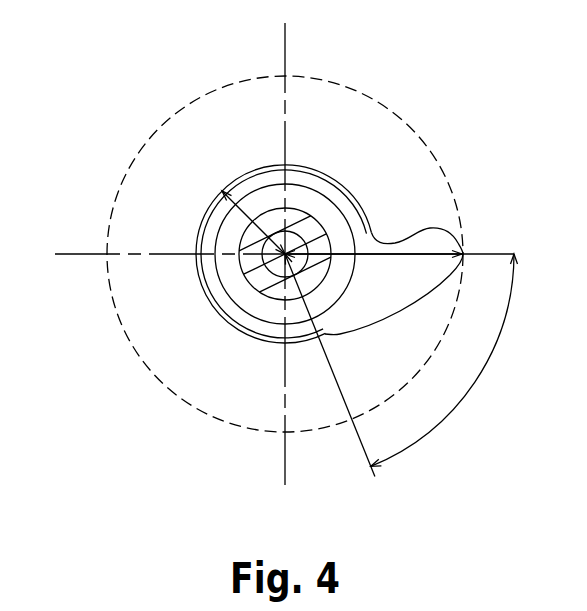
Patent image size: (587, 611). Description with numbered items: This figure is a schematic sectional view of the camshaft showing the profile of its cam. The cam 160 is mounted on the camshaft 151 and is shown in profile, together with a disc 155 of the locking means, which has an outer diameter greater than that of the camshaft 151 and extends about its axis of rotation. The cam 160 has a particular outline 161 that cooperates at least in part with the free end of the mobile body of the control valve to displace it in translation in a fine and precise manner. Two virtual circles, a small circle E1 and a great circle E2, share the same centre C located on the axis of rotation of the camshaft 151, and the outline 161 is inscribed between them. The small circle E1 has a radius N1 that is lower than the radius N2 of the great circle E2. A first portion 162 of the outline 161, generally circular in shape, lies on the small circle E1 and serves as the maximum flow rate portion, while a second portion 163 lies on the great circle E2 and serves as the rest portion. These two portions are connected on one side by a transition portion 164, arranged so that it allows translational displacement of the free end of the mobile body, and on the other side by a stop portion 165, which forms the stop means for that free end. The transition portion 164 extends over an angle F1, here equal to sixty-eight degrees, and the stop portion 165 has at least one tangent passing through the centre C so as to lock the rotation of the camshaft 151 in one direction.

The camshaft 151 is at (303, 208).
The disc 155 is at (268, 166).
The cam 160 is at (350, 214).
The outline 161 is at (248, 214).
The first portion 162 is at (217, 310).
The second portion 163 is at (463, 252).
The transition portion 164 is at (438, 288).
The stop portion 165 is at (403, 241).
The centre C is at (267, 272).
The radius of the small circle N1 is at (248, 215).
The radius of the great circle N2 is at (402, 255).
The small circle E1 is at (355, 296).
The great circle E2 is at (120, 322).
The angle F1 is at (452, 410).